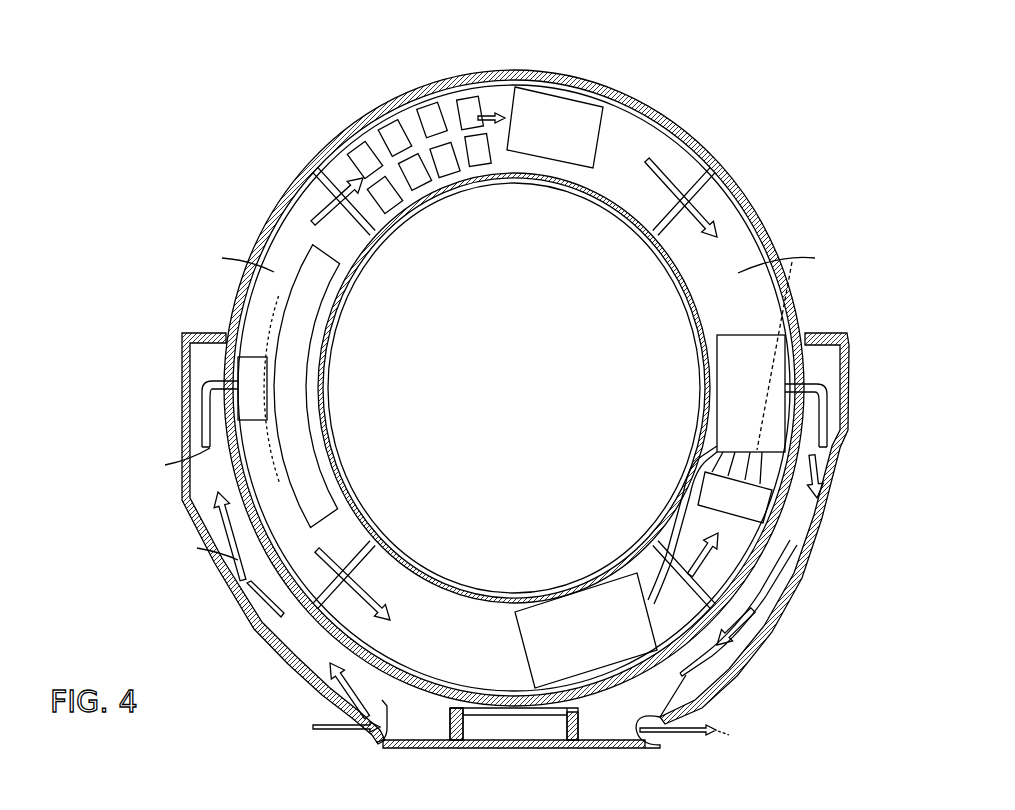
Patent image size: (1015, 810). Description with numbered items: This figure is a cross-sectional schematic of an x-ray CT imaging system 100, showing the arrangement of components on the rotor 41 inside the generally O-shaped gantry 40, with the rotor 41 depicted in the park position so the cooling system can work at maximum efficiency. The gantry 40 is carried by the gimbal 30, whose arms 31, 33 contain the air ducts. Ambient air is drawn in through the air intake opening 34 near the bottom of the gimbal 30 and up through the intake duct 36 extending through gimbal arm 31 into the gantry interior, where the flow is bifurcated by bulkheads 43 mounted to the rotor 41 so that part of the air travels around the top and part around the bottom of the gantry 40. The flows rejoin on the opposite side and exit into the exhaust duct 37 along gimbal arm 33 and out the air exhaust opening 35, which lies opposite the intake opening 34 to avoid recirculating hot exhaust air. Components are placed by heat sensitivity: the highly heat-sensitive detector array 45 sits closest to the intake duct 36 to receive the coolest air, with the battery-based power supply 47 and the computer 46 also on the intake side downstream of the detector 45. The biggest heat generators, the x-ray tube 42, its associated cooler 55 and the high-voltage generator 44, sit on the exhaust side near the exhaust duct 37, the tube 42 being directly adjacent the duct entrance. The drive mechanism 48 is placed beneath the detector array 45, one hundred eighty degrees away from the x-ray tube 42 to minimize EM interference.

The imaging system 100 is at (490, 370).
The gantry 40 is at (299, 179).
The rotor 41 is at (469, 646).
The bulkheads 43 is at (718, 170).
The battery-based power supply 47 is at (434, 110).
The computer 46 is at (565, 137).
The x-ray detector array 45 is at (268, 277).
The drive mechanism 48 is at (252, 380).
The x-ray source tube 42 is at (764, 366).
The cooler 55 is at (744, 508).
The high-voltage generator 44 is at (600, 641).
The gimbal 30 is at (485, 554).
The gimbal arm 31 is at (271, 636).
The air intake duct 36 is at (250, 592).
The air intake opening 34 is at (383, 742).
The gimbal arm 33 is at (823, 498).
The exhaust duct 37 is at (772, 600).
The air exhaust opening 35 is at (655, 740).